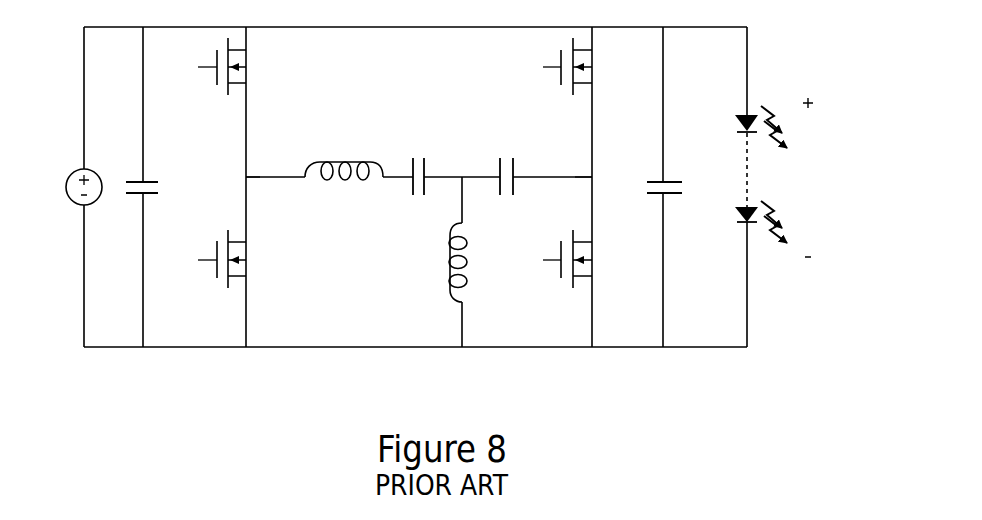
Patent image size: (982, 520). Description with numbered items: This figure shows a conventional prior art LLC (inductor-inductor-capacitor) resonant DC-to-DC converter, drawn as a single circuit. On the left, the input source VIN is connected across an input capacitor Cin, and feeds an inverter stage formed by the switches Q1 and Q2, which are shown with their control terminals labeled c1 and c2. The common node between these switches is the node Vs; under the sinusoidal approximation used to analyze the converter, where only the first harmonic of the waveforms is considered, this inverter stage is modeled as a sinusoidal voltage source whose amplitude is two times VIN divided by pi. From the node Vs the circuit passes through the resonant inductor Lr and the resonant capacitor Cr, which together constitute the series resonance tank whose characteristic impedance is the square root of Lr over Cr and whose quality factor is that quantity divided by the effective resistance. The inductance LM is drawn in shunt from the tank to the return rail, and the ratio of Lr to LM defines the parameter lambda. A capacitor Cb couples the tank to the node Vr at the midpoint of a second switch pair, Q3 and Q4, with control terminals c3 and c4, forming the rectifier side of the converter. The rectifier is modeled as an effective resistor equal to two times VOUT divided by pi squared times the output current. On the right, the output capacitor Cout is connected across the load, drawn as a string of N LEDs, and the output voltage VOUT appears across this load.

The input voltage VIN is at (68, 187).
The input capacitor Cin is at (159, 191).
The first switch transistor Q1 is at (246, 66).
The second switch transistor Q2 is at (246, 259).
The third switch transistor Q3 is at (591, 66).
The fourth switch transistor Q4 is at (591, 259).
The gate control signal of Q1 c1 is at (196, 74).
The gate control signal of Q2 c2 is at (196, 267).
The gate control signal of Q3 c3 is at (541, 74).
The gate control signal of Q4 c4 is at (540, 267).
The sinusoidal source voltage Vs is at (264, 164).
The rectifier node voltage Vr is at (575, 165).
The resonant inductor Lr is at (344, 156).
The resonant capacitor Cr is at (422, 164).
The blocking capacitor Cb is at (502, 164).
The magnetizing inductance LM is at (438, 262).
The output capacitor Cout is at (644, 191).
The string of N LEDs is at (739, 174).
The output voltage VOUT is at (804, 177).